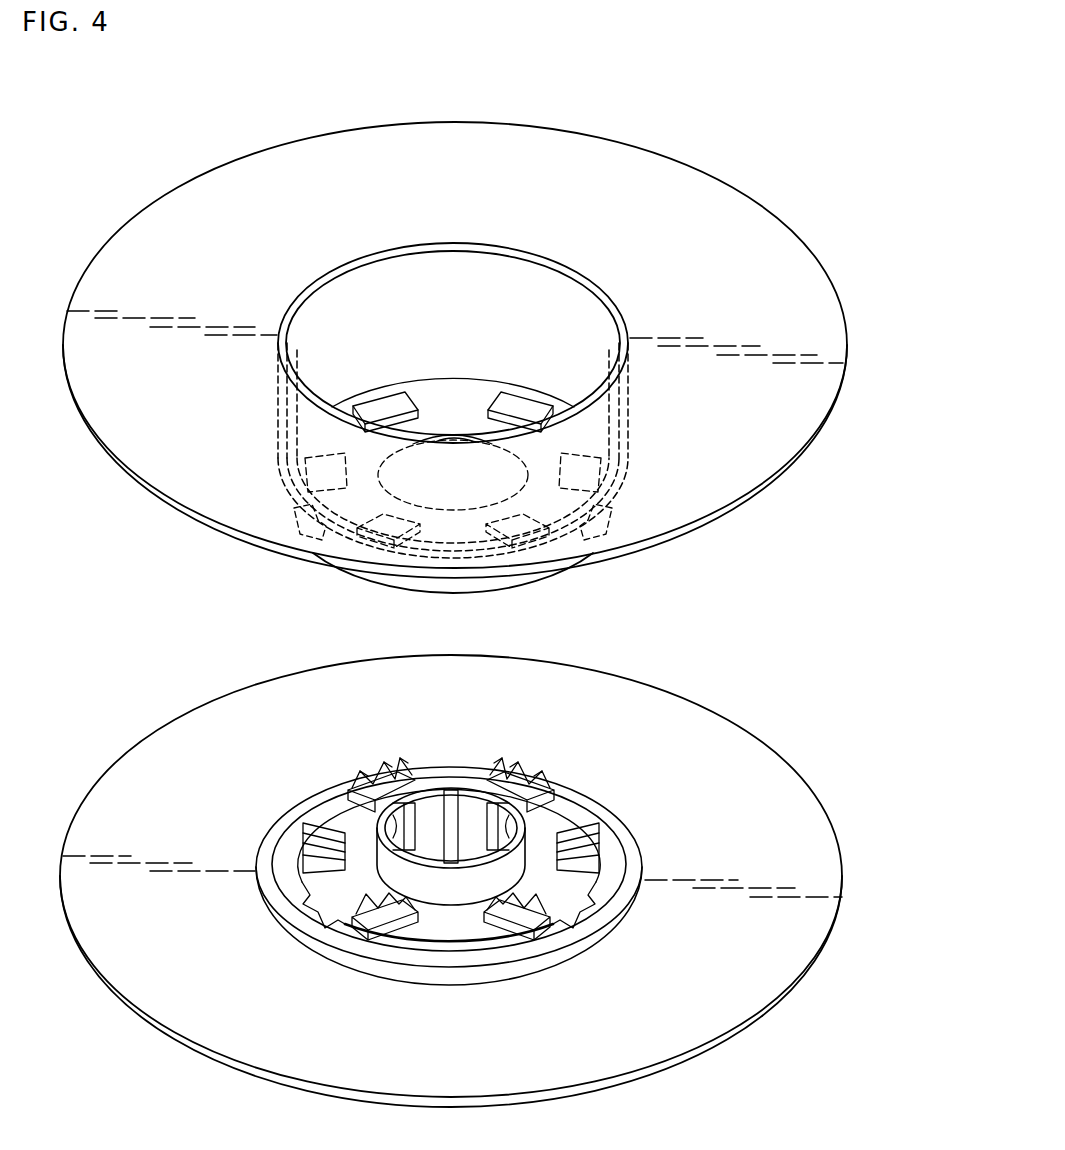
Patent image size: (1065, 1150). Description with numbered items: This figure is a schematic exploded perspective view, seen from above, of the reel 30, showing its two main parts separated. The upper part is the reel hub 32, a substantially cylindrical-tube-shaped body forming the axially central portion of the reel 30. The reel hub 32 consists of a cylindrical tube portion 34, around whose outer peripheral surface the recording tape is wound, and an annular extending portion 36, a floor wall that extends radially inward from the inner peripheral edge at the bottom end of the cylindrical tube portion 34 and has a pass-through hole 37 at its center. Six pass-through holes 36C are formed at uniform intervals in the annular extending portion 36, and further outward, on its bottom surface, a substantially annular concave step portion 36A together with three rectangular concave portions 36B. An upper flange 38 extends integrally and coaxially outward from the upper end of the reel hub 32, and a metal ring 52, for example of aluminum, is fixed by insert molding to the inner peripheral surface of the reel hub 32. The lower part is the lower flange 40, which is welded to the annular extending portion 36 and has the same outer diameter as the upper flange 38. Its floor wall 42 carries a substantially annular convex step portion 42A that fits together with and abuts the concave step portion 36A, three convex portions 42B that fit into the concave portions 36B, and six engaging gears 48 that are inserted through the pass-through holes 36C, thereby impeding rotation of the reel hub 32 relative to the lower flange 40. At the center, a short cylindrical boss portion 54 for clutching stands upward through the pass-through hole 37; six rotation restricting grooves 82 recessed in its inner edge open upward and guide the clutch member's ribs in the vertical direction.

The reel 30 is at (699, 124).
The reel hub 32 is at (460, 191).
The cylindrical tube portion 34 is at (452, 298).
The annular extending portion 36 is at (433, 397).
The concave step portion 36A is at (450, 560).
The concave portions 36B is at (305, 528).
The pass-through holes 36C is at (388, 400).
The pass-through hole 37 is at (457, 432).
The upper flange 38 is at (734, 215).
The lower flange 40 is at (730, 745).
The floor wall 42 is at (626, 852).
The convex step portion 42A is at (570, 798).
The convex portions 42B is at (330, 913).
The engaging gears 48 is at (372, 768).
The metal ring 52 is at (604, 296).
The boss portion for clutching 54 is at (455, 882).
The rotation restricting grooves 82 is at (451, 790).